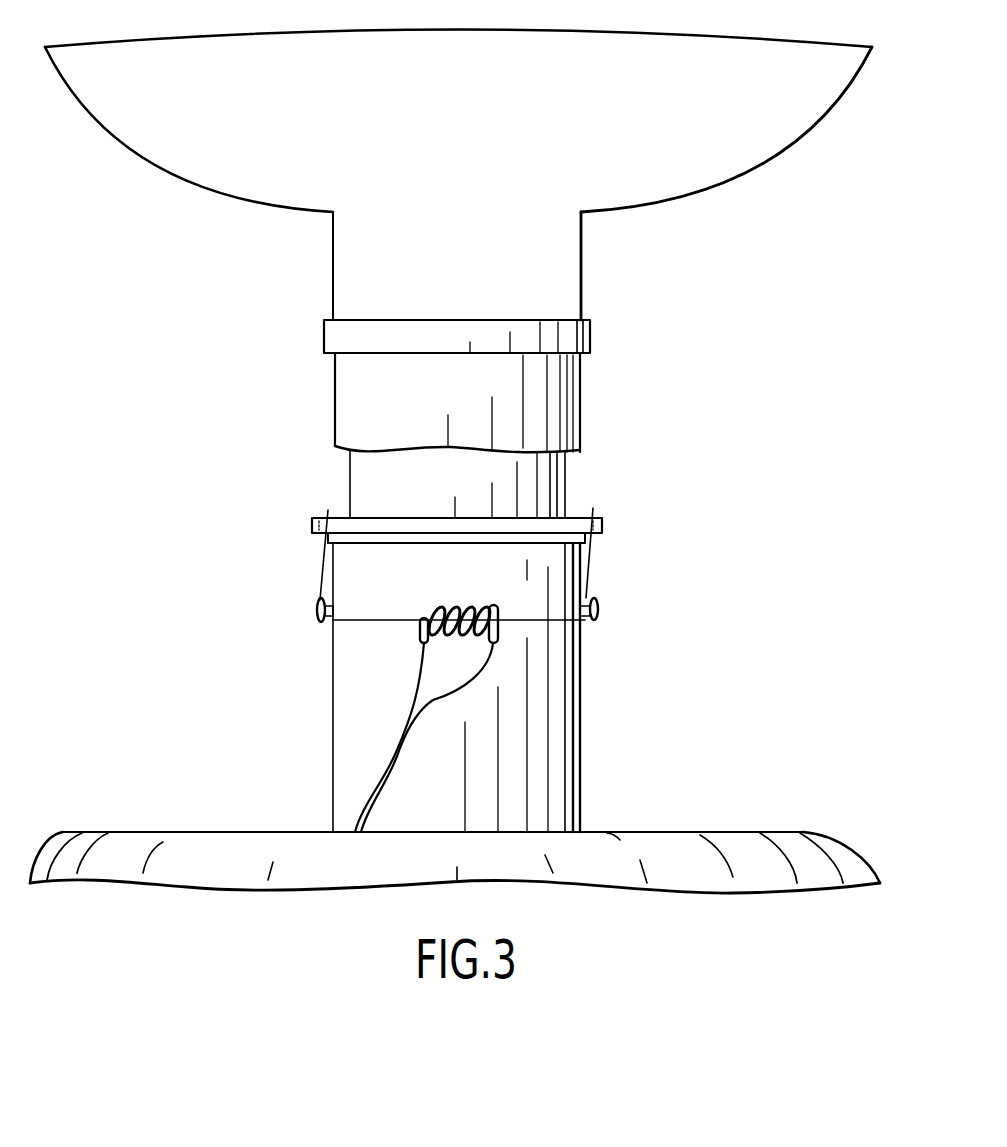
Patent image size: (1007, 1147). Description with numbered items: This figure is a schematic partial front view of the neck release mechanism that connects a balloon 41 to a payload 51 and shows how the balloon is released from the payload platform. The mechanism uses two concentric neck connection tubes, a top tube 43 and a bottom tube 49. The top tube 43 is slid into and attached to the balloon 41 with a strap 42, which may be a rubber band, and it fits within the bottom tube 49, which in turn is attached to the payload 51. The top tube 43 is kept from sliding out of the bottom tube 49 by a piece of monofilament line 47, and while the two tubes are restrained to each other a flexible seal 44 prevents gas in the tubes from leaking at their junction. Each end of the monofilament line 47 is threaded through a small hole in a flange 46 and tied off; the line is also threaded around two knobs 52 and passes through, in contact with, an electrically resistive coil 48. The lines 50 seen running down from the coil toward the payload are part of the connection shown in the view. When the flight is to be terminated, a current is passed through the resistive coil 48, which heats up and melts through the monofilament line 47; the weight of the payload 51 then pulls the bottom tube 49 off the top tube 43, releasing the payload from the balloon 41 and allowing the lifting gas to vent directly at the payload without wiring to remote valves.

The balloon 41 is at (557, 268).
The strap 42 is at (592, 337).
The top tube 43 is at (565, 477).
The flexible seal 44 is at (345, 533).
The flange 46 is at (590, 508).
The monofilament line 47 is at (590, 565).
The electrically resistive coil 48 is at (427, 607).
The bottom tube 49 is at (342, 675).
The cable 50 is at (397, 742).
The payload 51 is at (252, 848).
The knob 52 is at (317, 603).